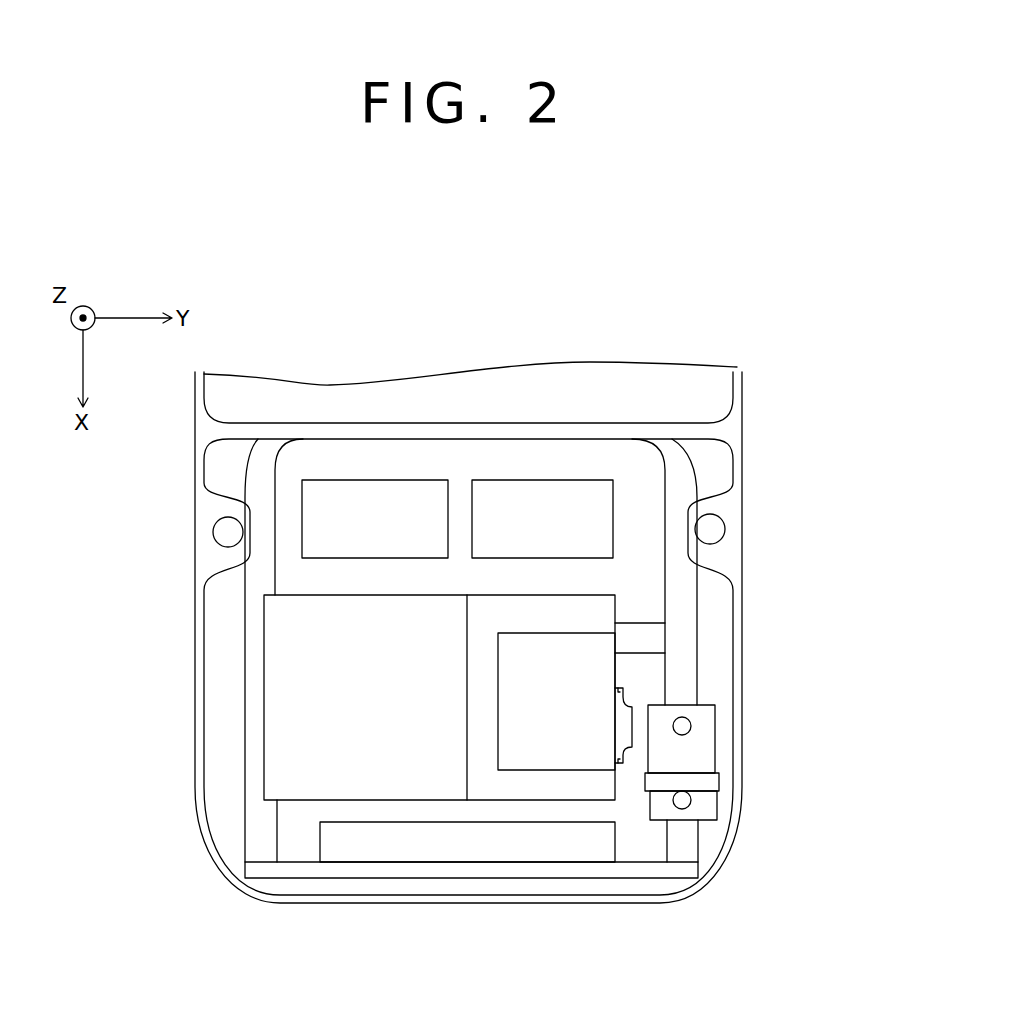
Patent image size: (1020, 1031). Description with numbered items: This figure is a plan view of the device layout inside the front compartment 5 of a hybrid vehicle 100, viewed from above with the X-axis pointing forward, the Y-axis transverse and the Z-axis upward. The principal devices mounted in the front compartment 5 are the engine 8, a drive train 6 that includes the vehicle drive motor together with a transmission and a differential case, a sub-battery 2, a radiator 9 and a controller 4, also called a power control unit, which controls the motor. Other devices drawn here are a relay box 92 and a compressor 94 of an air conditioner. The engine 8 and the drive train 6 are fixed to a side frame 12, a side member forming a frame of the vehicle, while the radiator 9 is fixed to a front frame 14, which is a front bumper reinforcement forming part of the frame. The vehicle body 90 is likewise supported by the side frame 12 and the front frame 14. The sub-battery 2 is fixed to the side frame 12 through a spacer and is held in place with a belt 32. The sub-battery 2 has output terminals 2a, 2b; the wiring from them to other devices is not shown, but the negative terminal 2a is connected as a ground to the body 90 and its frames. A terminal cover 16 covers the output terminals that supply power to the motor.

The vehicle 100 is at (818, 273).
The vehicle body 90 is at (730, 498).
The side frame 12 is at (687, 585).
The front compartment 5 is at (645, 466).
The relay box 92 is at (373, 495).
The compressor 94 is at (548, 493).
The engine 8 is at (332, 693).
The controller 4 is at (588, 673).
The drive train 6 is at (744, 628).
The terminal cover 16 is at (627, 740).
The sub-battery 2 is at (732, 773).
The negative terminal 2a is at (690, 800).
The output terminal 2b is at (690, 726).
The belt 32 is at (707, 782).
The front frame 14 is at (299, 872).
The radiator 9 is at (392, 848).